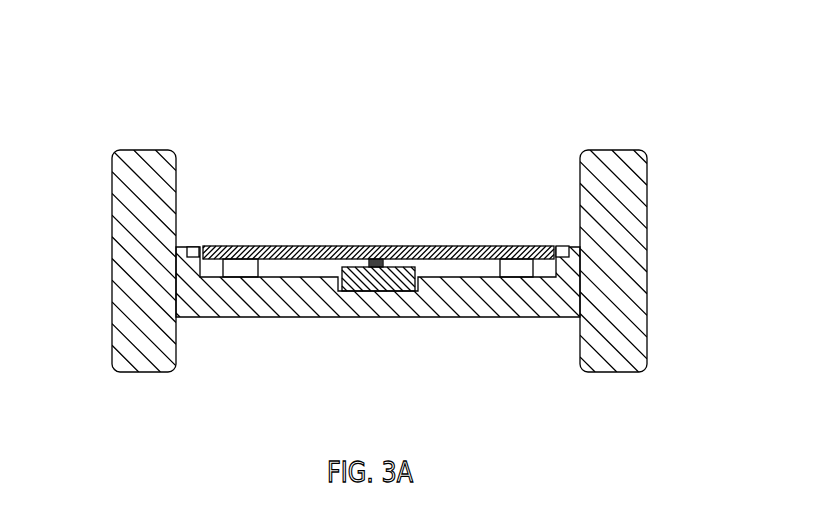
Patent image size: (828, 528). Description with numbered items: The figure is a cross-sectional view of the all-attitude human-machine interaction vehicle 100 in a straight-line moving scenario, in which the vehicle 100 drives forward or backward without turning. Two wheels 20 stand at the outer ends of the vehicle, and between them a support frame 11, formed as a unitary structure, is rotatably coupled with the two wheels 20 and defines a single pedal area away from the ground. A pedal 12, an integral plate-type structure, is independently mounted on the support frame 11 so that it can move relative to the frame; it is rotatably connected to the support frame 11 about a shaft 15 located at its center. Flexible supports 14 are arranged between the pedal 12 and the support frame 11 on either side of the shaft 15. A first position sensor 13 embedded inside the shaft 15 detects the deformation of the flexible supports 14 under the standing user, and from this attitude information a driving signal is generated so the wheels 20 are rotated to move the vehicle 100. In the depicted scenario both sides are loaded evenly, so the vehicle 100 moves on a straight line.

The all-attitude human-machine interaction vehicle 100 is at (423, 98).
The wheels 20 is at (128, 295).
The support frame 11 is at (276, 293).
The pedal 12 is at (386, 246).
The flexible supports 14 is at (244, 268).
The first position sensor 13 is at (393, 285).
The shaft 15 is at (375, 268).